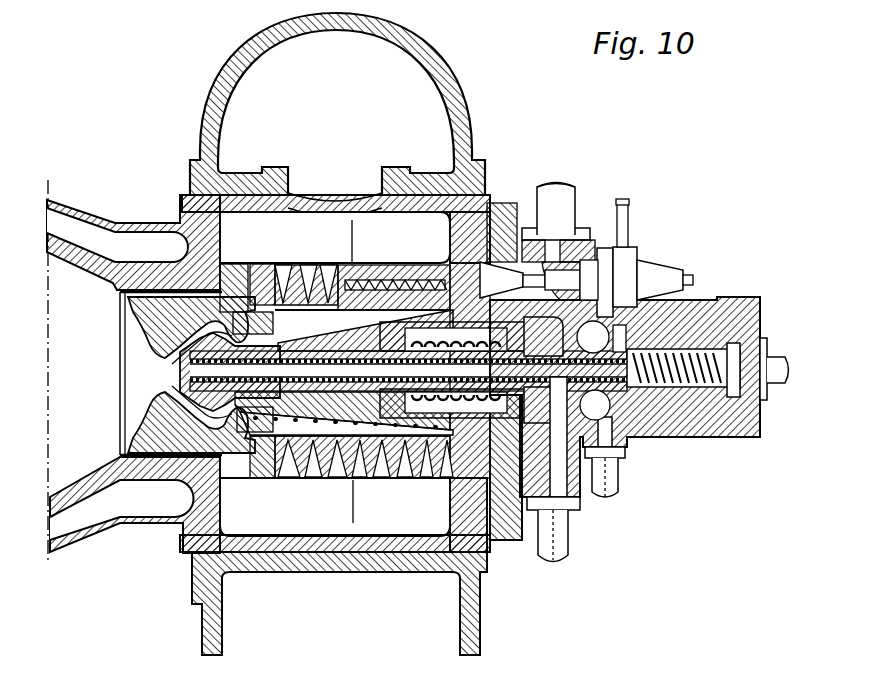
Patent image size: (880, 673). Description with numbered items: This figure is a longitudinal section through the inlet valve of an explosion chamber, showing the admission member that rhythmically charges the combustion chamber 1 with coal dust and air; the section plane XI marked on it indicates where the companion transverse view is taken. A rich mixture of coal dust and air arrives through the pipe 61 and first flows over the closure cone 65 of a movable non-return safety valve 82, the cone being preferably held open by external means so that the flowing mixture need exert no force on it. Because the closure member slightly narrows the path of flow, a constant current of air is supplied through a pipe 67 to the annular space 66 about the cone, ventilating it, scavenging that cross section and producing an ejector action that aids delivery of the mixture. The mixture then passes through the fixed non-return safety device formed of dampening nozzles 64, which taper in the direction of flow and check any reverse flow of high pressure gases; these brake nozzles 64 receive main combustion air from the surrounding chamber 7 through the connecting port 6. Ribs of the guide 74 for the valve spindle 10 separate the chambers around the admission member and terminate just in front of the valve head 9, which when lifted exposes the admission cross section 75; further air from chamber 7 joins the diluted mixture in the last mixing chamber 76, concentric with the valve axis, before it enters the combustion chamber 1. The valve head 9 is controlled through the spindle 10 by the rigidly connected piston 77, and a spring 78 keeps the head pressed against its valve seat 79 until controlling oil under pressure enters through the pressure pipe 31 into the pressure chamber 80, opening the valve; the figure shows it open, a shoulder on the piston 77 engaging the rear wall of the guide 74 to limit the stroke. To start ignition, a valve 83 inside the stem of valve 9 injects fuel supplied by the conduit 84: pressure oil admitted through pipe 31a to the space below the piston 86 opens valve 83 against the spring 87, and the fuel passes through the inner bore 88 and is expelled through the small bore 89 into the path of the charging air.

The combustion chamber 1 is at (95, 379).
The connecting port 6 is at (326, 178).
The chamber 7 is at (335, 374).
The admission member valve head 9 is at (182, 387).
The valve spindle 10 is at (334, 352).
The pressure pipe 31 is at (553, 537).
The pressure oil pipe 31a is at (607, 478).
The pipe 61 is at (558, 242).
The dampening nozzles 64 is at (333, 272).
The closure cone 65 is at (497, 275).
The annular space 66 is at (519, 238).
The pipe 67 is at (624, 222).
The guide 74 is at (381, 414).
The admission cross section 75 is at (177, 474).
The mixing chamber 76 is at (262, 338).
The piston 77 is at (471, 405).
The spring 78 is at (451, 445).
The valve seat 79 is at (270, 442).
The pressure chamber 80 is at (471, 336).
The movable non-return safety valve 82 is at (604, 265).
The valve 83 is at (173, 362).
The conduit 84 is at (777, 372).
The piston 86 is at (678, 400).
The spring 87 is at (708, 400).
The inner bore 88 is at (593, 337).
The small bore 89 is at (150, 340).
The section line XI is at (366, 371).